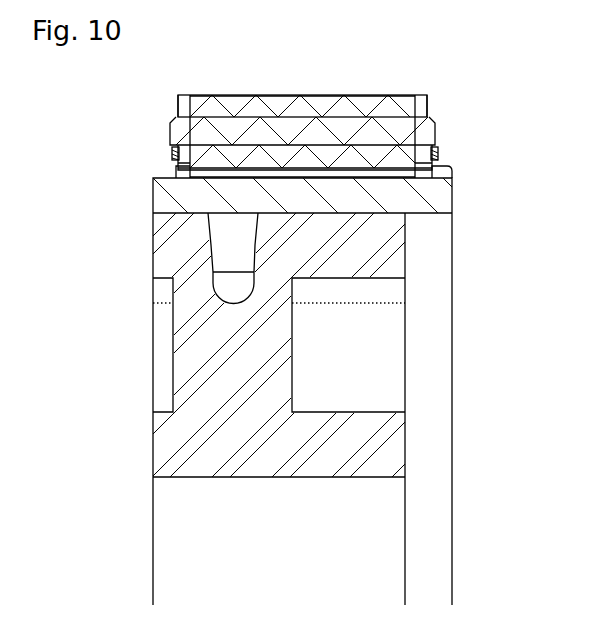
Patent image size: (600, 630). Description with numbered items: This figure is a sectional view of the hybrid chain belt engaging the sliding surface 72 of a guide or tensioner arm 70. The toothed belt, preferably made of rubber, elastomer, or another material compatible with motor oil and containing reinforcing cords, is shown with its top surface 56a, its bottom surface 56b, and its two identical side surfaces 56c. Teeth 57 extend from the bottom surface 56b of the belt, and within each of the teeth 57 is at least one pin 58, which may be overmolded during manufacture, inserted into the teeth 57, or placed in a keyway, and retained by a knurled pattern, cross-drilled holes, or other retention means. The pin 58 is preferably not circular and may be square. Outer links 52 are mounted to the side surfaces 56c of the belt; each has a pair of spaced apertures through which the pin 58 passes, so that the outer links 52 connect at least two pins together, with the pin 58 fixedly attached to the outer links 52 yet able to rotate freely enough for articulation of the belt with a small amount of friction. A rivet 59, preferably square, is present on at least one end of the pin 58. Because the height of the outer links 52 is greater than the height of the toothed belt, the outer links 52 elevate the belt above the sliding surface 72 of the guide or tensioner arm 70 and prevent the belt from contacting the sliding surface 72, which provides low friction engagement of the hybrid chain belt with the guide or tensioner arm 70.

The outer links 52 is at (183, 100).
The top surface 56a is at (214, 95).
The bottom surface 56b is at (340, 167).
The side surfaces 56c is at (412, 160).
The teeth 57 is at (274, 100).
The pin 58 is at (401, 133).
The rivet 59 is at (173, 152).
The guide or tensioner arm 70 is at (153, 262).
The sliding surface 72 is at (176, 178).